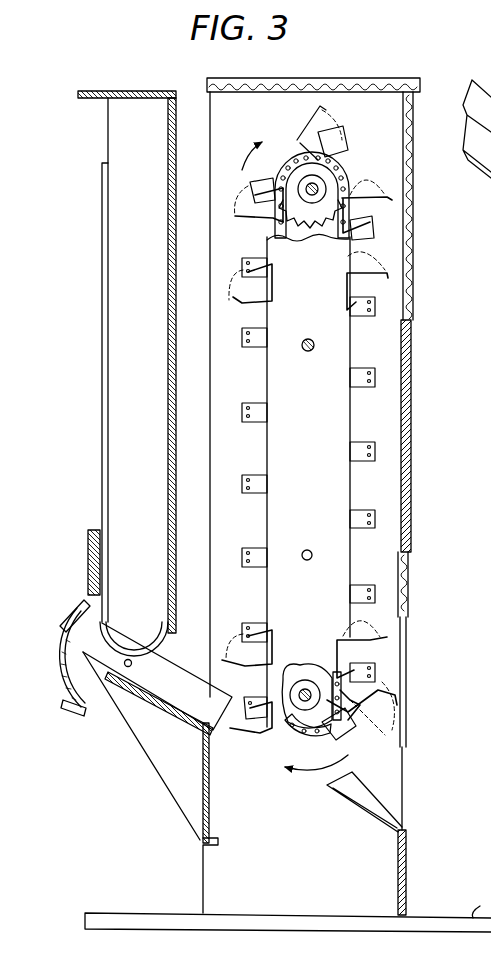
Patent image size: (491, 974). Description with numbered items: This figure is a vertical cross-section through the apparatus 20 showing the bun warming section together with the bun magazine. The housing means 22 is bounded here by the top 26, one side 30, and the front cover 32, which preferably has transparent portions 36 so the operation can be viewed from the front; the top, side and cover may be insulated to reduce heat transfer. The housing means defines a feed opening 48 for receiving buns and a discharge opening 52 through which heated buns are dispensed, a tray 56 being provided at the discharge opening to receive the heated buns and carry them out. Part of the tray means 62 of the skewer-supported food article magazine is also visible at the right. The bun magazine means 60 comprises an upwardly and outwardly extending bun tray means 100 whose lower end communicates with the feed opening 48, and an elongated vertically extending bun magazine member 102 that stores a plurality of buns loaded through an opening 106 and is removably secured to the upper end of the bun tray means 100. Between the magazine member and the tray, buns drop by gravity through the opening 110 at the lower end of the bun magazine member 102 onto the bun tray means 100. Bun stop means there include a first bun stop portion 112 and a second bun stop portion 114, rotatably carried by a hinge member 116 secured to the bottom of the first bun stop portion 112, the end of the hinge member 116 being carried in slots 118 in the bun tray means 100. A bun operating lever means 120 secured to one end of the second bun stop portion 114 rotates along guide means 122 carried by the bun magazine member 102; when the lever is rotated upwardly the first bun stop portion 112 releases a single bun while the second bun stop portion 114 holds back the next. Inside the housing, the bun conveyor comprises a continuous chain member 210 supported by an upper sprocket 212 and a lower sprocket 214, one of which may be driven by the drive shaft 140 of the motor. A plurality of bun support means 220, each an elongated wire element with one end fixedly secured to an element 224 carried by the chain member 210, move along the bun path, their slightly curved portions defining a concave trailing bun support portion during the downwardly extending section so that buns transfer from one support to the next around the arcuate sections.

The apparatus 20 is at (426, 75).
The housing means 22 is at (414, 592).
The top 26 is at (315, 80).
The side 30 is at (222, 160).
The front cover 32 is at (414, 287).
The transparent portions 36 is at (412, 398).
The feed opening 48 is at (323, 500).
The discharge opening 52 is at (400, 771).
The tray 56 is at (400, 815).
The bun magazine means 60 is at (82, 471).
The tray means 62 is at (490, 183).
The bun tray means 100 is at (165, 709).
The bun magazine member 102 is at (100, 318).
The opening 106 is at (101, 136).
The opening 110 is at (168, 620).
The first bun stop portion 112 is at (101, 633).
The second bun stop portion 114 is at (85, 622).
The hinge member 116 is at (133, 667).
The slots 118 is at (134, 660).
The bun operating lever means 120 is at (51, 678).
The guide means 122 is at (56, 657).
The drive shaft 140 is at (304, 682).
The continuous chain member 210 is at (347, 162).
The upper sprocket 212 is at (303, 176).
The lower sprocket 214 is at (321, 670).
The bun support means 220 is at (234, 632).
The element 224 is at (243, 348).